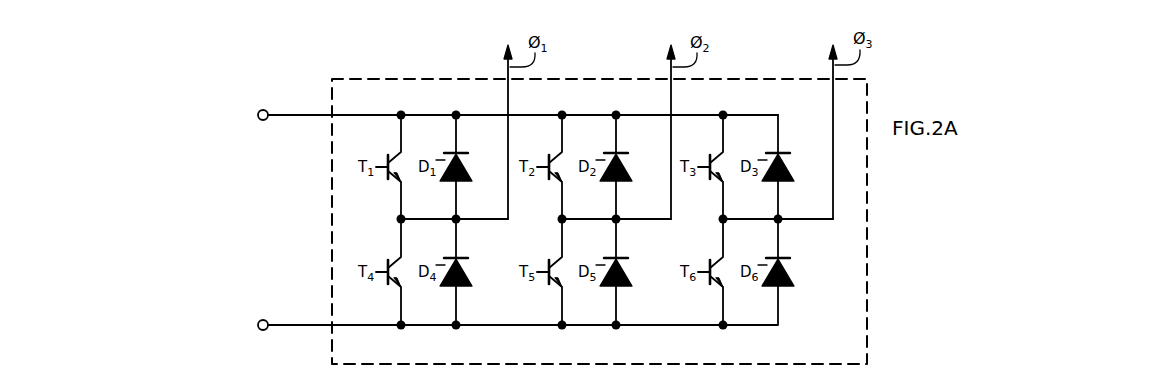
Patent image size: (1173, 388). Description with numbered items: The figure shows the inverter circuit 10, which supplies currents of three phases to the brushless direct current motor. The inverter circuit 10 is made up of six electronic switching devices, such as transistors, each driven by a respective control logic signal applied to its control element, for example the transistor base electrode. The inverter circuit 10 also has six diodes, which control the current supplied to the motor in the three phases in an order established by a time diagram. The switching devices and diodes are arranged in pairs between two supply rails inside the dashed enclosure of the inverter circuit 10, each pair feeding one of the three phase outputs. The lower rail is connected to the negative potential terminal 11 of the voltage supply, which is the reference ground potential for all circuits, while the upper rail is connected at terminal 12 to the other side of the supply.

The inverter circuit 10 is at (868, 350).
The negative potential terminal 11 is at (283, 330).
The positive DC bus terminal 12 is at (292, 110).